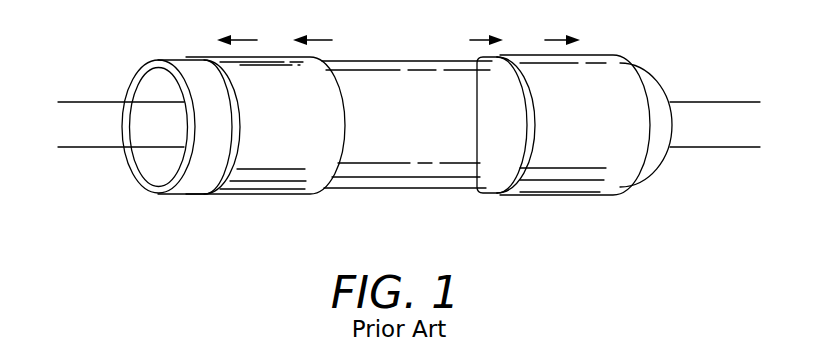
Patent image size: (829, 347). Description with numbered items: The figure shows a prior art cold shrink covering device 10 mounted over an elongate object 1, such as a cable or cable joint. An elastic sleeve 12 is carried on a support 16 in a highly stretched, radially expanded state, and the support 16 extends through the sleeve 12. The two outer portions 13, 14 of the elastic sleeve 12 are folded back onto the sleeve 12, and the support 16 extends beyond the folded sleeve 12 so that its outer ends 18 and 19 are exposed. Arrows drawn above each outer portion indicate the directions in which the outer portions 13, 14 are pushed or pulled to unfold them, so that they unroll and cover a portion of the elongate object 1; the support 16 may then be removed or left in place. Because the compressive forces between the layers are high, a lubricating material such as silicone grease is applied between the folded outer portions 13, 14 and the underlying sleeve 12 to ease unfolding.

The elongate object 1 is at (705, 115).
The covering device 10 is at (404, 83).
The elastic sleeve 12 is at (426, 153).
The outer portion 13 is at (262, 173).
The outer portion 14 is at (571, 173).
The support 16 is at (193, 70).
The outer end 18 is at (160, 200).
The outer end 19 is at (650, 169).